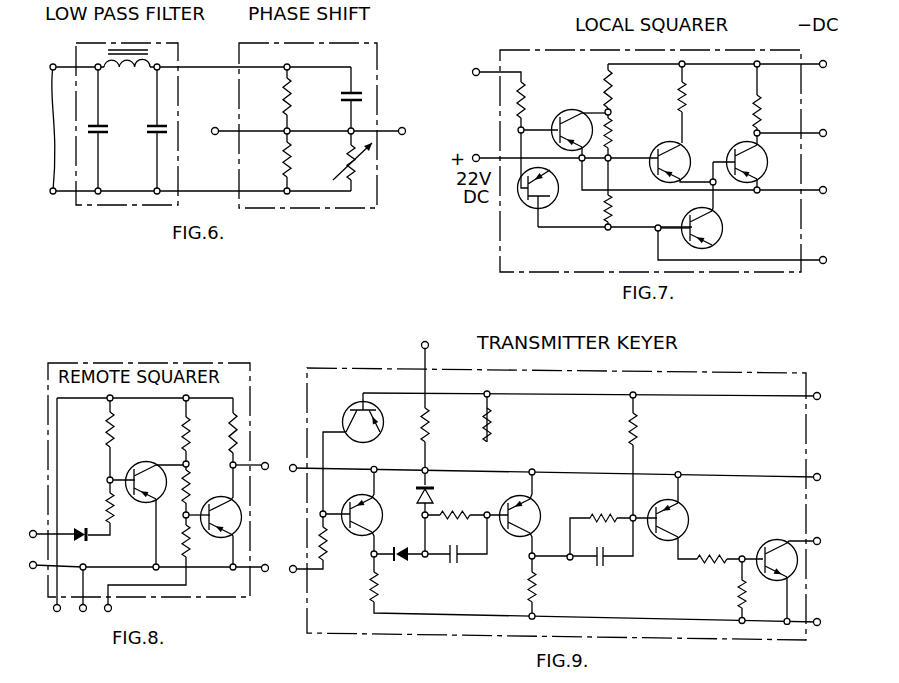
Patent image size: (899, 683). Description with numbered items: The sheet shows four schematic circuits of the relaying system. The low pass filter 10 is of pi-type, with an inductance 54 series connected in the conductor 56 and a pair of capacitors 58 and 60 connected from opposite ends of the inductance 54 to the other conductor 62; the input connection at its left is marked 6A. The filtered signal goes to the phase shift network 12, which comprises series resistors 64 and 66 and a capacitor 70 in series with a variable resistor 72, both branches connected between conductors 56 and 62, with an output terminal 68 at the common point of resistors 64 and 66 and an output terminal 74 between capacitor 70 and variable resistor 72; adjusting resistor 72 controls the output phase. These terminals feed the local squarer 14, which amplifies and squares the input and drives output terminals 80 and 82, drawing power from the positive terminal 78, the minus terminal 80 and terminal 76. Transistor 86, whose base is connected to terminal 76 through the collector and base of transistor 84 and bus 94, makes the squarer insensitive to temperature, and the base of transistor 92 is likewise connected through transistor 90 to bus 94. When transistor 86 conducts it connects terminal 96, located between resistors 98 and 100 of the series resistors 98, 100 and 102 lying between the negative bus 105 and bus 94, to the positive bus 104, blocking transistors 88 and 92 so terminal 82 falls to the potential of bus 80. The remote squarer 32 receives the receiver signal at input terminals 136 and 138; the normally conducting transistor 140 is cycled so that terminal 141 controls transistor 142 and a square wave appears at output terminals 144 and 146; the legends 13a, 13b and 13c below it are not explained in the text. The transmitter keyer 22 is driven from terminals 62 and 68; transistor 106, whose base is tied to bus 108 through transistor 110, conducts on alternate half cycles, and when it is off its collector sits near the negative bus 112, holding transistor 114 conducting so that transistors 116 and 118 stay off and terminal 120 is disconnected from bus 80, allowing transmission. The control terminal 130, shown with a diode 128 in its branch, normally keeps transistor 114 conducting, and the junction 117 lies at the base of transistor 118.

In FIG. 6, the low pass filter 10 is at (126, 30).
In FIG. 6, the phase shift network 12 is at (302, 30).
In FIG. 6, the input terminals 6A is at (49, 129).
In FIG. 6, the inductance 54 is at (121, 67).
In FIG. 6, the conductor 56 is at (206, 68).
In FIG. 6, the capacitor 58 is at (114, 124).
In FIG. 6, the capacitor 60 is at (151, 133).
In FIG. 6, the conductor 62 is at (208, 191).
In FIG. 9, the conductor 62 is at (293, 574).
In FIG. 6, the resistor 64 is at (283, 99).
In FIG. 6, the resistor 66 is at (283, 164).
In FIG. 6, the output terminal 68 is at (239, 145).
In FIG. 7, the output terminal 68 is at (476, 155).
In FIG. 9, the output terminal 68 is at (293, 467).
In FIG. 6, the capacitor 70 is at (348, 100).
In FIG. 6, the variable resistor 72 is at (347, 162).
In FIG. 6, the output terminal 74 is at (403, 129).
In FIG. 7, the output terminal 74 is at (476, 69).
In FIG. 7, the local squaring amplifier 14 is at (522, 50).
In FIG. 7, the transistor 84 is at (553, 205).
In FIG. 7, the transistor 86 is at (558, 114).
In FIG. 7, the transistor 88 is at (660, 145).
In FIG. 7, the transistor 90 is at (722, 219).
In FIG. 7, the transistor 92 is at (769, 161).
In FIG. 7, the bus 94 is at (572, 229).
In FIG. 7, the terminal 96 is at (612, 118).
In FIG. 7, the resistor 98 is at (603, 82).
In FIG. 7, the resistor 100 is at (612, 131).
In FIG. 7, the resistor 102 is at (613, 212).
In FIG. 7, the positive bus 104 is at (633, 192).
In FIG. 7, the negative bus 105 is at (714, 65).
In FIG. 7, the terminal 76 is at (823, 258).
In FIG. 8, the terminal 76 is at (112, 608).
In FIG. 9, the terminal 76 is at (817, 393).
In FIG. 7, the terminal 78 is at (823, 188).
In FIG. 8, the terminal 78 is at (81, 611).
In FIG. 9, the terminal 78 is at (817, 473).
In FIG. 7, the terminal 80 is at (823, 62).
In FIG. 8, the terminal 80 is at (53, 608).
In FIG. 9, the terminal 80 is at (818, 620).
In FIG. 7, the output terminal 82 is at (823, 131).
In FIG. 8, the remote squaring amplifier 32 is at (48, 366).
In FIG. 8, the input terminal 136 is at (31, 533).
In FIG. 8, the input terminal 138 is at (33, 568).
In FIG. 8, the transistor 140 is at (158, 462).
In FIG. 8, the terminal 141 is at (188, 462).
In FIG. 8, the transistor 142 is at (221, 516).
In FIG. 8, the output terminal 144 is at (261, 478).
In FIG. 8, the output terminal 146 is at (264, 566).
In FIG. 8, the conductor 13a is at (189, 673).
In FIG. 8, the conductor 13b is at (237, 673).
In FIG. 8, the conductor 13c is at (277, 673).
In FIG. 9, the transmitter keying circuit 22 is at (697, 372).
In FIG. 9, the control terminal 130 is at (422, 345).
In FIG. 9, the transistor 110 is at (348, 411).
In FIG. 9, the transistor 106 is at (363, 495).
In FIG. 9, the zener diode 128 is at (436, 487).
In FIG. 9, the bus 108 is at (553, 395).
In FIG. 9, the negative potential bus 112 is at (416, 613).
In FIG. 9, the transistor 114 is at (542, 502).
In FIG. 9, the transistor 116 is at (693, 505).
In FIG. 9, the junction 117 is at (741, 555).
In FIG. 9, the transistor 118 is at (783, 541).
In FIG. 9, the output terminal 120 is at (817, 539).